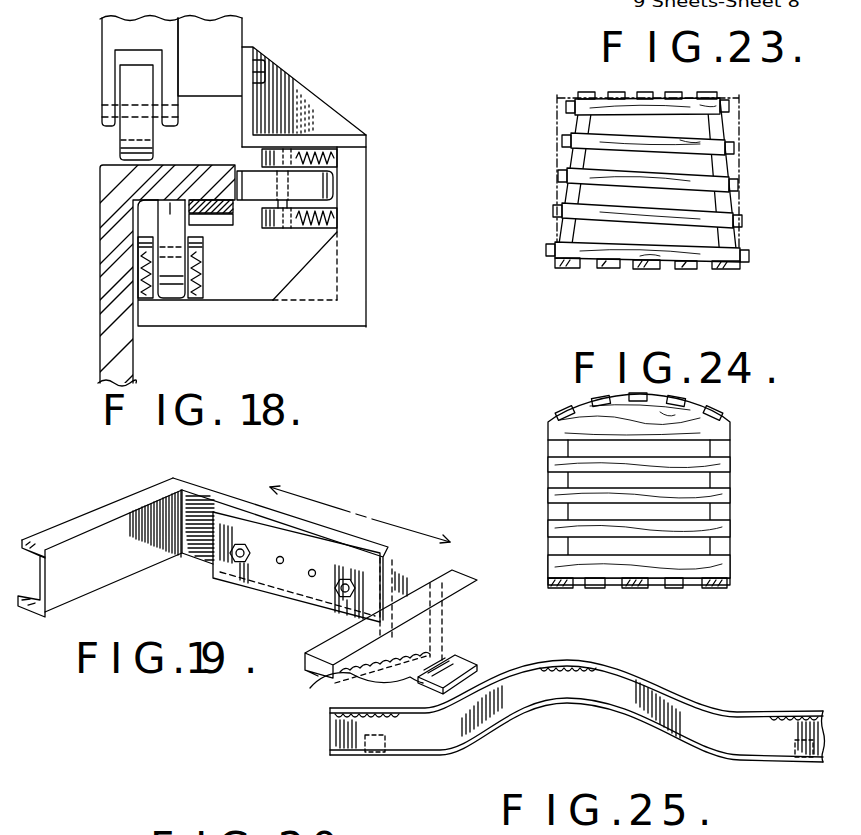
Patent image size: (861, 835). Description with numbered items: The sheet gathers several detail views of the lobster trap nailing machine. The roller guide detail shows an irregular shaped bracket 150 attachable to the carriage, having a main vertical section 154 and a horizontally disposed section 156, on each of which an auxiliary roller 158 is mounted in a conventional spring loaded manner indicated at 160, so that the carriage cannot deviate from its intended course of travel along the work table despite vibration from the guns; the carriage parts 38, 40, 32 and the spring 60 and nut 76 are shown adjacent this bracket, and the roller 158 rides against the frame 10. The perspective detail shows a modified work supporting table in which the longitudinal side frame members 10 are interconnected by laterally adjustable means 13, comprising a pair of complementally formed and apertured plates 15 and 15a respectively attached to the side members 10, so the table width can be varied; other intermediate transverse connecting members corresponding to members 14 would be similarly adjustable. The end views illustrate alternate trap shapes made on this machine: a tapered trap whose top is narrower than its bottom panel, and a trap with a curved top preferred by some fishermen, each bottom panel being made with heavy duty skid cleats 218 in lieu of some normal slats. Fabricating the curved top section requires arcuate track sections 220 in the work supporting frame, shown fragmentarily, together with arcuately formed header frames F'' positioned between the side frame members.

In FIG. 18, the carriage wall 38 is at (112, 30).
In FIG. 18, the roller 40 is at (130, 89).
In FIG. 18, the carriage body 32 is at (238, 39).
In FIG. 18, the spring 60 is at (312, 150).
In FIG. 18, the bracket 150 is at (353, 163).
In FIG. 18, the auxiliary roller 158 is at (217, 152).
In FIG. 18, the nut 76 is at (218, 223).
In FIG. 18, the main vertical section 154 is at (353, 272).
In FIG. 18, the spring loaded means 160 is at (308, 208).
In FIG. 18, the horizontally disposed section 156 is at (208, 315).
In FIG. 18, the longitudinal side frame member 10 is at (98, 268).
In FIG. 19, the longitudinal side frame member 10 is at (93, 547).
In FIG. 19, the plate 15 is at (216, 494).
In FIG. 19, the laterally adjustable means 13 is at (224, 598).
In FIG. 19, the plate 15a is at (305, 585).
In FIG. 23, the skid cleat 218 is at (553, 262).
In FIG. 24, the skid cleat 218 is at (640, 615).
In FIG. 24, the pallet F'' is at (654, 487).
In FIG. 25, the arcuate track section 220 is at (648, 675).
In FIG. 25, the transverse connecting member 14 is at (385, 738).